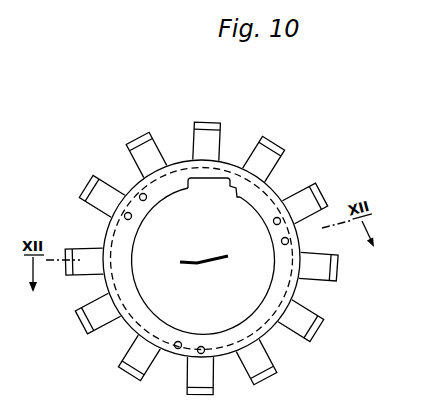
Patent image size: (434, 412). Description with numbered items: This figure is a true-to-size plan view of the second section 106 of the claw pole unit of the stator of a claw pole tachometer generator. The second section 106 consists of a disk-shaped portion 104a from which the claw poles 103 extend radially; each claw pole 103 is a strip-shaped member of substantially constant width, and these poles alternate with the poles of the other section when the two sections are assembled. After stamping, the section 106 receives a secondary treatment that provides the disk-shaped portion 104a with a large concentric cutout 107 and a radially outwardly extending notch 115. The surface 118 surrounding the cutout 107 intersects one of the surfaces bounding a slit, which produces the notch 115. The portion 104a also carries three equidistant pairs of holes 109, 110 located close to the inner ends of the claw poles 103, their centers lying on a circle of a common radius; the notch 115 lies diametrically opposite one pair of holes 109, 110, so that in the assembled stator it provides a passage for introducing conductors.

The claw poles 103 is at (196, 123).
The disk-shaped portion 104a is at (282, 292).
The second section 106 is at (124, 338).
The concentric cutout 107 is at (250, 310).
The holes 109 is at (125, 213).
The holes 110 is at (141, 194).
The notch 115 is at (224, 181).
The surface 118 is at (131, 246).